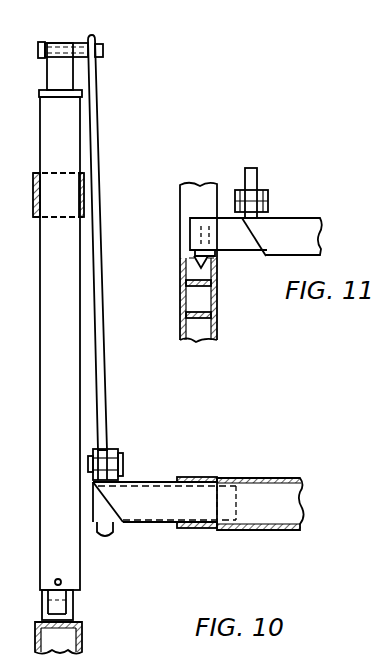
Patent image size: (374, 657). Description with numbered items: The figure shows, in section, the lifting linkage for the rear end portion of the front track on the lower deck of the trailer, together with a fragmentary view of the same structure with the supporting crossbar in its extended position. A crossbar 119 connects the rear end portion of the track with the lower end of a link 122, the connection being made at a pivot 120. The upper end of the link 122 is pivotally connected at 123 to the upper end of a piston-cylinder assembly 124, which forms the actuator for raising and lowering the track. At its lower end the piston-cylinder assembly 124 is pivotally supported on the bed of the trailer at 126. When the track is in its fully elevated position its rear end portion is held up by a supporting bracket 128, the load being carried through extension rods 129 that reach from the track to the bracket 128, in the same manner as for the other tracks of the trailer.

In FIG. 10, the crossbar 119 is at (178, 512).
In FIG. 11, the crossbar 119 is at (300, 225).
In FIG. 10, the connection of crossbar and link 120 is at (119, 452).
In FIG. 10, the link 122 is at (115, 315).
In FIG. 11, the link 122 is at (258, 175).
In FIG. 10, the pivotal connection of link and piston-cylinder assembly 123 is at (104, 50).
In FIG. 10, the piston-cylinder assembly 124 is at (73, 247).
In FIG. 10, the pivotal support on trailer bed 126 is at (75, 602).
In FIG. 11, the supporting bracket 128 is at (212, 267).
In FIG. 10, the extension rod 129 is at (116, 520).
In FIG. 11, the extension rod 129 is at (222, 227).